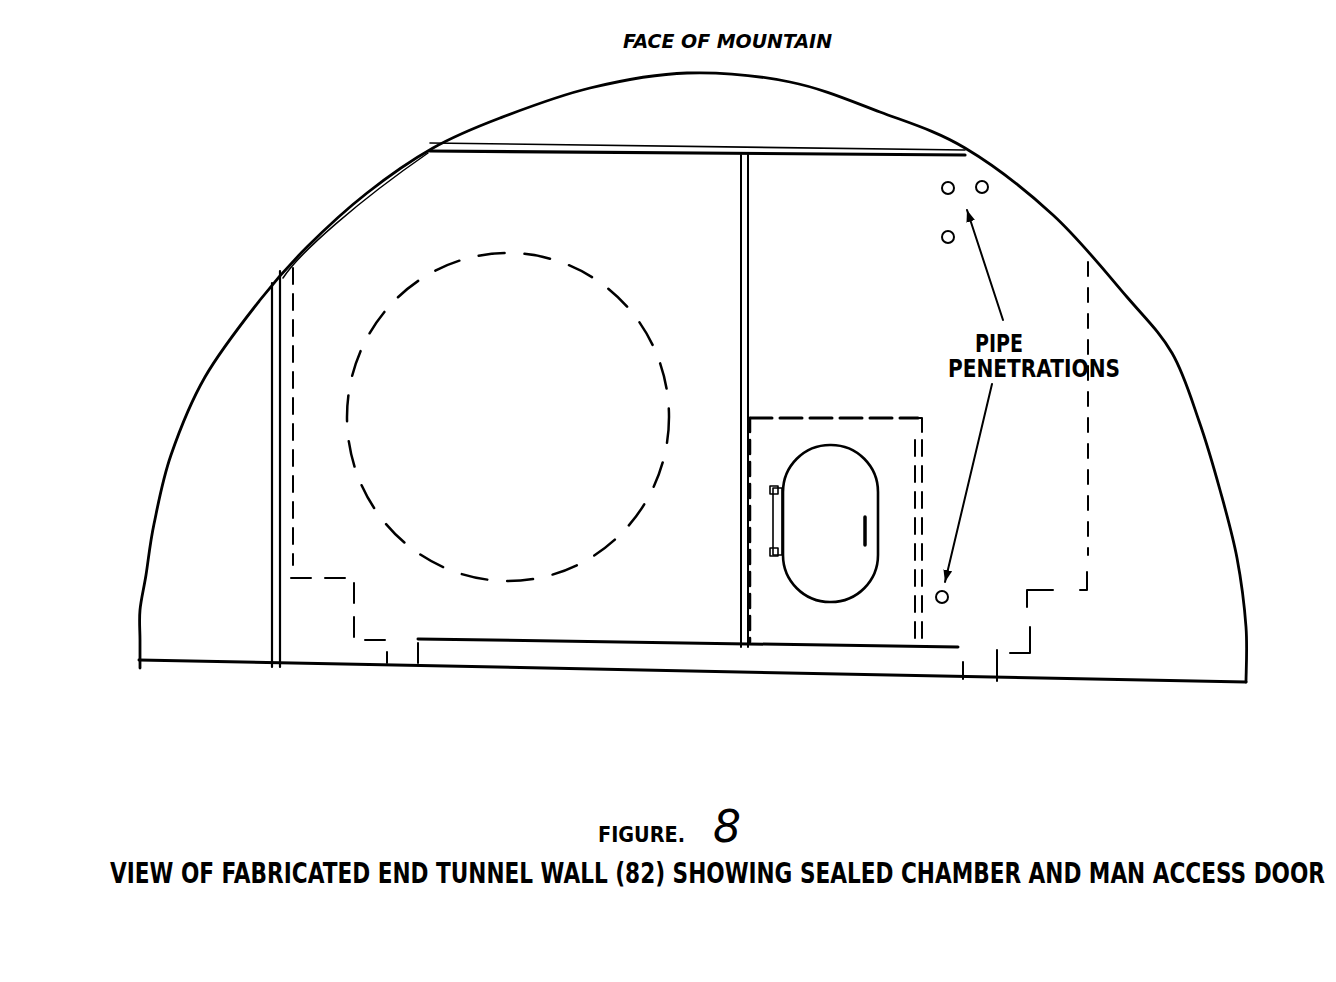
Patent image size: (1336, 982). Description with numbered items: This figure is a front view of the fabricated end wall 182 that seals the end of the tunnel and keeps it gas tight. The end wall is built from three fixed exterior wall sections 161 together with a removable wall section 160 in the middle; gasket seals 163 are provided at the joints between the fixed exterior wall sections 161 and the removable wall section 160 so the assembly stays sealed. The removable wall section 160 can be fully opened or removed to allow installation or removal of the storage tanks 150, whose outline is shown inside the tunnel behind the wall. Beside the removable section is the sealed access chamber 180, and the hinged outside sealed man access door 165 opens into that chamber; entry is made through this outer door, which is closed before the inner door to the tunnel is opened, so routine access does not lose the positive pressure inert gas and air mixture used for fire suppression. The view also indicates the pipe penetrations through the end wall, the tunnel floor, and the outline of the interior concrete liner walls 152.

The storage tank 150 is at (505, 256).
The interior concrete liner wall 152 is at (1094, 510).
The removable wall section 160 is at (697, 395).
The fixed exterior wall section 161 is at (223, 457).
The gasket seal 163 is at (513, 158).
The sealed man access door 165 is at (828, 608).
The sealed access chamber 180 is at (778, 407).
The fabricated end wall 182 is at (528, 634).